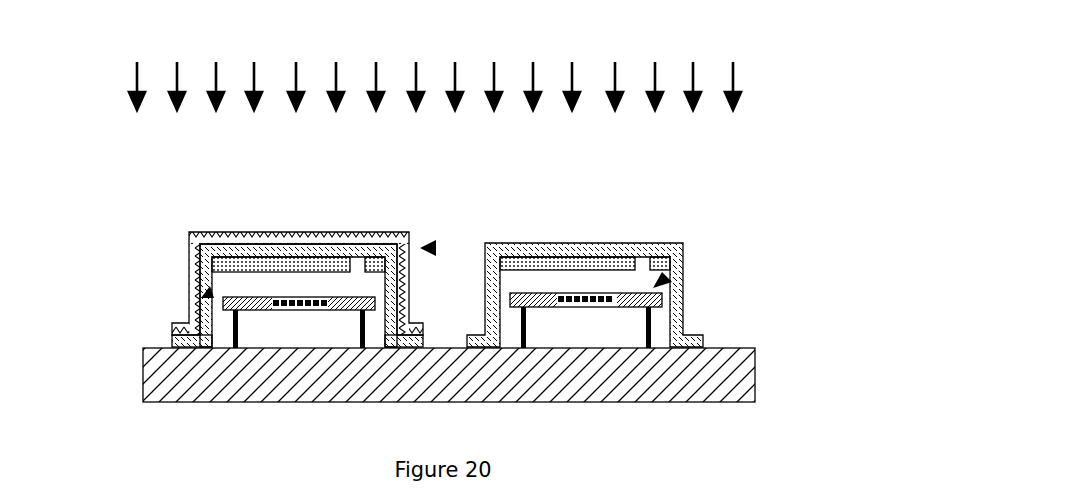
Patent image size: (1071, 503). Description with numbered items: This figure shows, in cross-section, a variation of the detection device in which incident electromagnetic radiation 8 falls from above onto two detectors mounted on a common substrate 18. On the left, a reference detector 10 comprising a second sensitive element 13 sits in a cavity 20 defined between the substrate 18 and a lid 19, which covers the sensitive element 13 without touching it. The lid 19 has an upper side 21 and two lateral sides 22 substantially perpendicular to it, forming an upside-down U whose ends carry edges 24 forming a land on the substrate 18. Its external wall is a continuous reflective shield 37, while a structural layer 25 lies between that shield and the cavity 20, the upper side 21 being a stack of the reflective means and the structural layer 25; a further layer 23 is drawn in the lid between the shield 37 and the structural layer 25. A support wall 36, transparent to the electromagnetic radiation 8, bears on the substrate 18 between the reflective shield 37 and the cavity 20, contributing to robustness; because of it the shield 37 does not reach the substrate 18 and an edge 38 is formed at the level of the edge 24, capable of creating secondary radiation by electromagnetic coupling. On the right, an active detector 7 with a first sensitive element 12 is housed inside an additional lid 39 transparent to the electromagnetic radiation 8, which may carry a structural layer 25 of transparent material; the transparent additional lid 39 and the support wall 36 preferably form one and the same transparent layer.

The active detector 7 is at (665, 278).
The electromagnetic radiation 8 is at (733, 82).
The reference detector 10 is at (245, 267).
The first element 12 is at (583, 293).
The second sensitive element 13 is at (318, 297).
The substrate 18 is at (707, 380).
The lid 19 is at (436, 248).
The cavity 20 is at (338, 246).
The upper side 21 is at (243, 232).
The lateral sides 22 is at (188, 303).
The metal layer 23 is at (360, 250).
The edge 24 is at (172, 330).
The structural layer 25 is at (325, 262).
The support wall 36 is at (400, 232).
The continuous reflective shield 37 is at (244, 249).
The edge 38 is at (172, 336).
The additional lid 39 is at (655, 252).